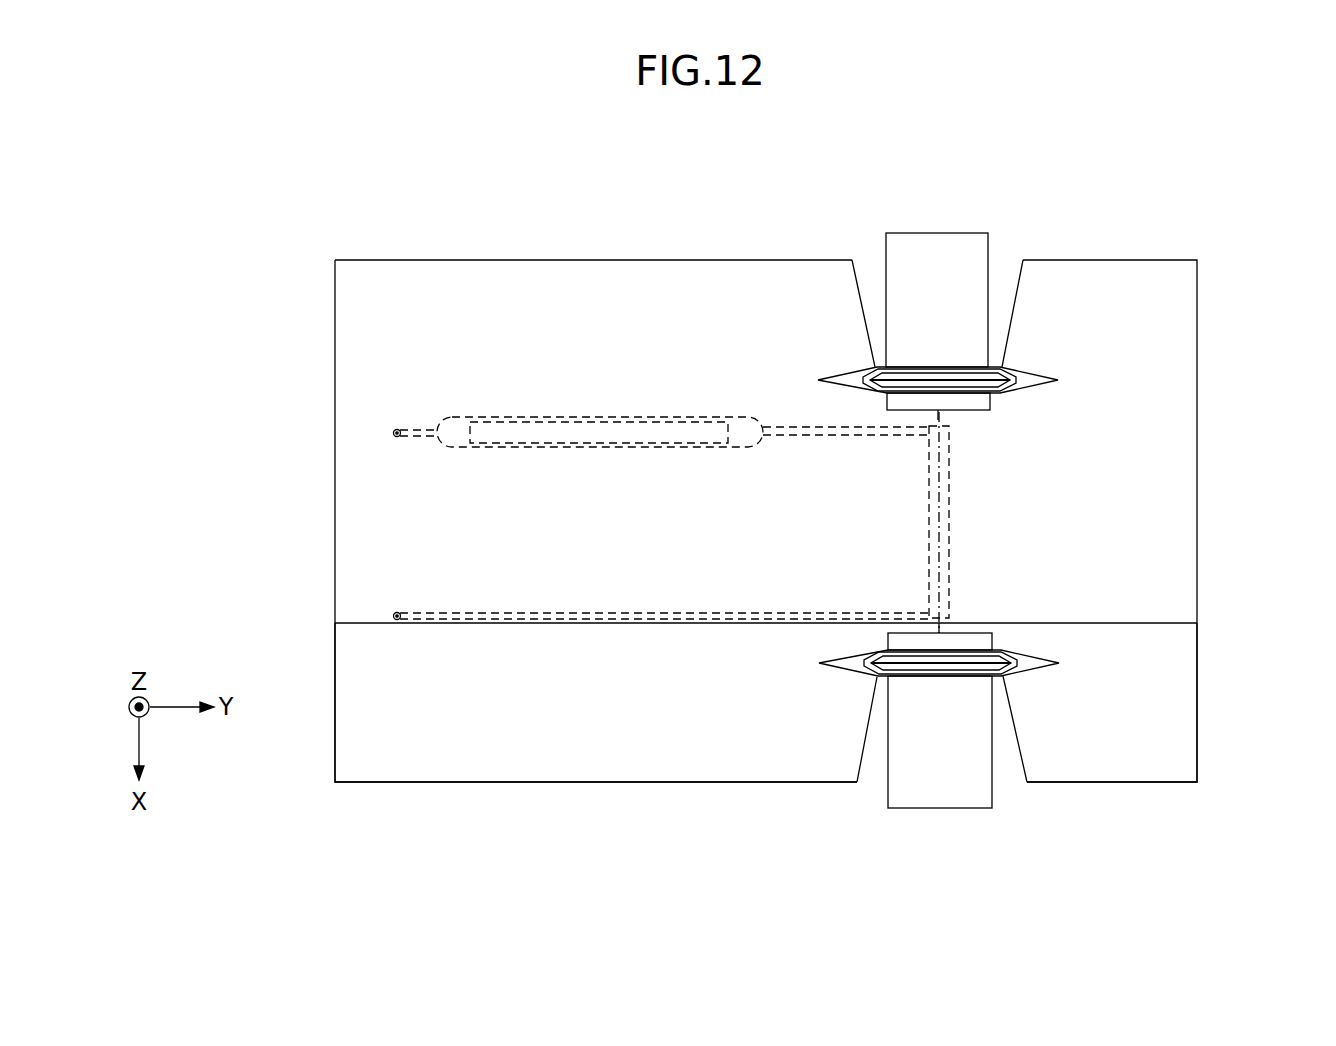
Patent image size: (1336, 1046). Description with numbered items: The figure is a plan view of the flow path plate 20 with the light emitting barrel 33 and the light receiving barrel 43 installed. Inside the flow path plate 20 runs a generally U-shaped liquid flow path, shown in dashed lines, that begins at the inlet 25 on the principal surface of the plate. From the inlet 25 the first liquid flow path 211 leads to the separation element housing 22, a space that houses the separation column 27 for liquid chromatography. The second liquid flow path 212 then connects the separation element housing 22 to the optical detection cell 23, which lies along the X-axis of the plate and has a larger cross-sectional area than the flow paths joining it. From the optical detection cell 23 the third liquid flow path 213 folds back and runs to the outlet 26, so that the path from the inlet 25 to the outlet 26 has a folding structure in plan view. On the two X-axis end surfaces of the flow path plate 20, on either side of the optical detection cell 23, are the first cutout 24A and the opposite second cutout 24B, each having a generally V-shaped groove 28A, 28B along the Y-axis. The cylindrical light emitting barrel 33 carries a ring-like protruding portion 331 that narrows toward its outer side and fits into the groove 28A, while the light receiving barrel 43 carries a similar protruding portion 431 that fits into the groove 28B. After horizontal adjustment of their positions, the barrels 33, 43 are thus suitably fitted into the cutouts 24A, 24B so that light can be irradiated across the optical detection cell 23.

The flow path plate 20 is at (1172, 214).
The first liquid flow path 211 is at (415, 428).
The second liquid flow path 212 is at (773, 427).
The third liquid flow path 213 is at (535, 625).
The separation element housing 22 is at (463, 418).
The separation column 27 is at (533, 422).
The inlet 25 is at (396, 430).
The outlet 26 is at (396, 613).
The optical detection cell 23 is at (950, 518).
The first cutout 24A is at (877, 360).
The second cutout 24B is at (877, 680).
The groove 28A is at (870, 368).
The groove 28B is at (872, 677).
The light emitting barrel 33 is at (988, 260).
The protruding portion 331 is at (1010, 367).
The light receiving barrel 43 is at (990, 782).
The protruding portion 431 is at (1010, 673).